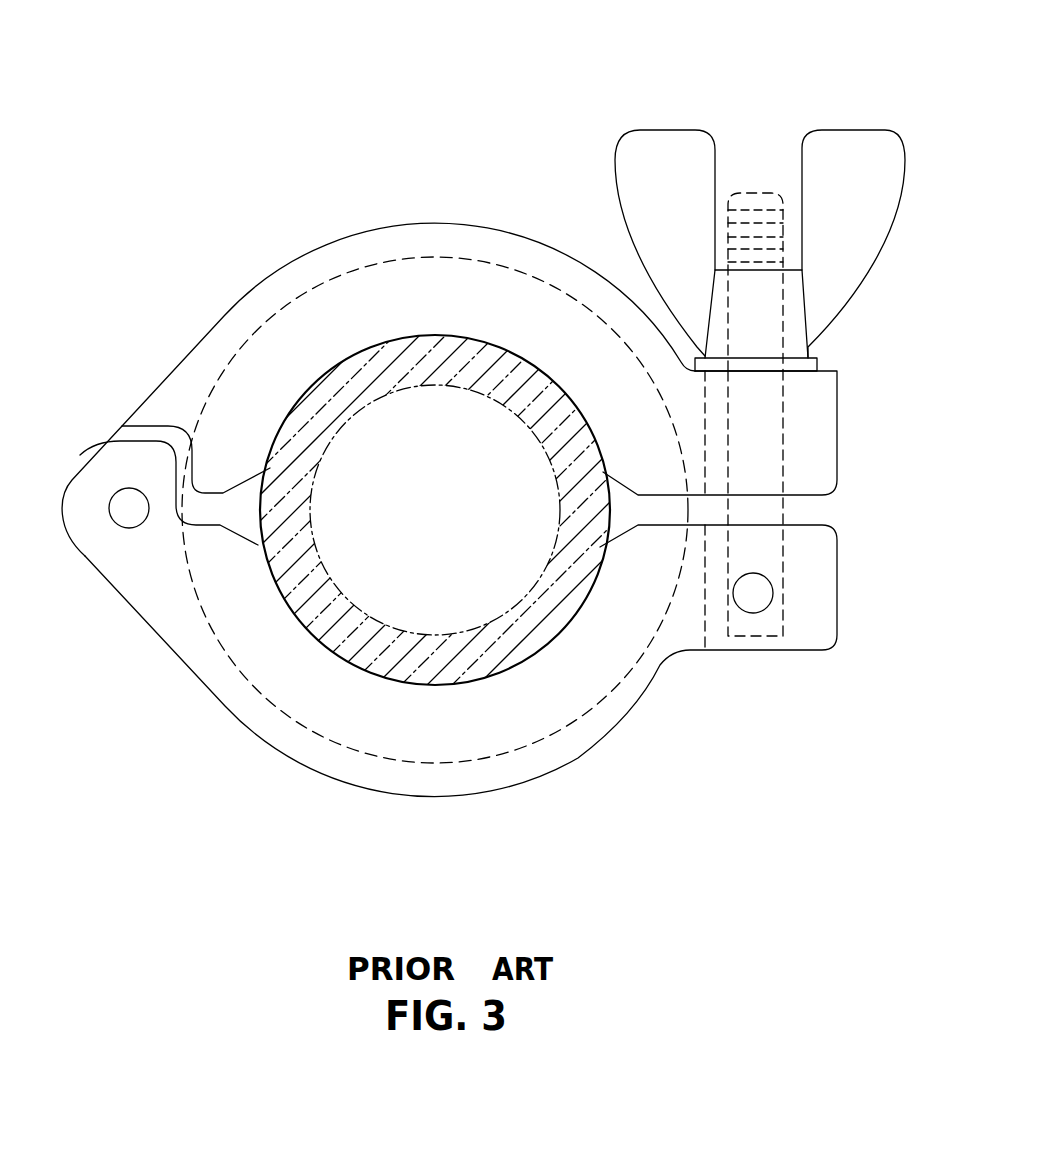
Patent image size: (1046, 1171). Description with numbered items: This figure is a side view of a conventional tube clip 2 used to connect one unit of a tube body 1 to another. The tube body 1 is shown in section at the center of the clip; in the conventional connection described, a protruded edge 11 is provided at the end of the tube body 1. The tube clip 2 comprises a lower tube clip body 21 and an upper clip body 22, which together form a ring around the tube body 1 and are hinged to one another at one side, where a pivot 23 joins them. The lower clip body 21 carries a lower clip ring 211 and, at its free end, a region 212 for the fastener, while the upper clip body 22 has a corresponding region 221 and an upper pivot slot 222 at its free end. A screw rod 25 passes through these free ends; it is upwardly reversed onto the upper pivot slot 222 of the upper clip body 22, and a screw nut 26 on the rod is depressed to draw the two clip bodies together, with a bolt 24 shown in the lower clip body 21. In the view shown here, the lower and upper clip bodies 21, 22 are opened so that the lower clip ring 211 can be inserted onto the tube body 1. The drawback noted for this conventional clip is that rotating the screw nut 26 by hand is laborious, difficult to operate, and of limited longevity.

The tube body 1 is at (372, 650).
The protruded edge 11 is at (237, 675).
The tube clip 2 is at (463, 218).
The tube clip body 21 is at (422, 787).
The lower clip ring 211 is at (483, 753).
The bolt hole of lower clamp half 212 is at (722, 650).
The upper clip body 22 is at (333, 257).
The groove of upper clamp half 221 is at (260, 330).
The upper pivot slot 222 is at (705, 437).
The pivot pin 23 is at (125, 512).
The bolt 24 is at (753, 597).
The screw rod 25 is at (760, 200).
The screw nut 26 is at (648, 194).